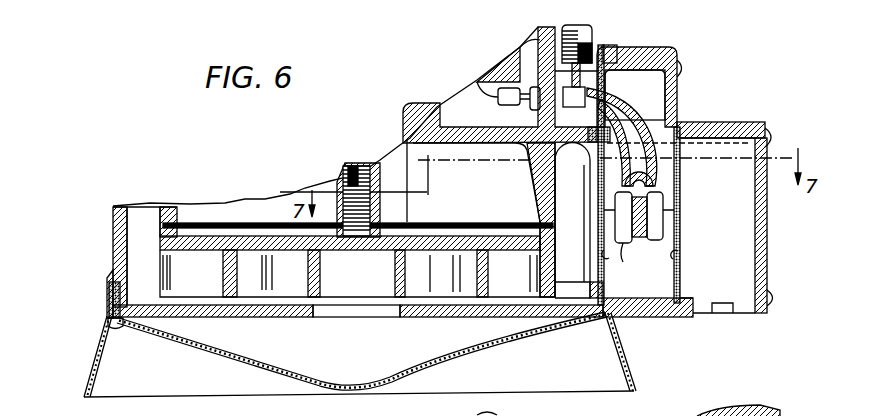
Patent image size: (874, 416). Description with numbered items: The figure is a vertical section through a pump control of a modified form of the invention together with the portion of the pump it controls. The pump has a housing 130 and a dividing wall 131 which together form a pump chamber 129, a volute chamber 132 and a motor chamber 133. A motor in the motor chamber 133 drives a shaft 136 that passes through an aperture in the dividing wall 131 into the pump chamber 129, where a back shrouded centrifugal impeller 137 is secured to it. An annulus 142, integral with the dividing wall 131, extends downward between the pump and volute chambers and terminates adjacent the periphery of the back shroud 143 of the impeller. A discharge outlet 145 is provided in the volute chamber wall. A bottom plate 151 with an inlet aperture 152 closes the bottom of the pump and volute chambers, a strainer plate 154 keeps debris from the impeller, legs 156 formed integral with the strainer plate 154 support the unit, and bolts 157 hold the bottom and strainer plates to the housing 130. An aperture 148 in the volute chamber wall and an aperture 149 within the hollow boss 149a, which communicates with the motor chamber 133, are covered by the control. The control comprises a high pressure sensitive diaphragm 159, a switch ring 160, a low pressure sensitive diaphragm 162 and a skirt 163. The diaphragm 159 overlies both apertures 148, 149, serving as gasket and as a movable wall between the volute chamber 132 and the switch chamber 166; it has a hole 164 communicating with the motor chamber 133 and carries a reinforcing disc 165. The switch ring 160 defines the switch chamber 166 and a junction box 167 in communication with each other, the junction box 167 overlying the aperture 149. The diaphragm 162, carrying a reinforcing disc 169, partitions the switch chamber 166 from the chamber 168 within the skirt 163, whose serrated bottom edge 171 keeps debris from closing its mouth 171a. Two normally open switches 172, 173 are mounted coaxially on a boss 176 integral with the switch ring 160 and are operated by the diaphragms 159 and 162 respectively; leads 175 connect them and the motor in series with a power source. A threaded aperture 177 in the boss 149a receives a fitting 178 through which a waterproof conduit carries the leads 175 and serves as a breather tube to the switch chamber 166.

The pump chamber 129 is at (260, 212).
The housing 130 is at (112, 219).
The dividing wall 131 is at (413, 131).
The volute chamber 132 is at (138, 212).
The motor chamber 133 is at (452, 107).
The shaft 136 is at (352, 175).
The back shrouded centrifugal impeller 137 is at (307, 280).
The annulus 142 is at (533, 173).
The back shroud 143 is at (398, 227).
The discharge outlet 145 is at (773, 405).
The aperture 148 is at (592, 198).
The aperture 149 is at (570, 117).
The hollow boss 149a is at (530, 40).
The bottom plate 151 is at (288, 320).
The inlet aperture 152 is at (353, 313).
The strainer plate 154 is at (213, 353).
The legs 156 is at (95, 348).
The bolts 157 is at (108, 328).
The high pressure sensitive diaphragm 159 is at (602, 227).
The switch ring 160 is at (662, 317).
The low pressure sensitive diaphragm 162 is at (677, 172).
The skirt 163 is at (765, 228).
The hole 164 is at (608, 92).
The reinforcing disc 165 is at (605, 255).
The switch chamber 166 is at (667, 290).
The junction box 167 is at (678, 87).
The chamber 168 is at (747, 256).
The reinforcing disc 169 is at (677, 255).
The serrated bottom edge 171 is at (740, 313).
The mouth 171a is at (720, 313).
The switch 172 is at (625, 243).
The switch 173 is at (658, 202).
The leads 175 is at (627, 117).
The boss 176 is at (637, 241).
The threaded aperture 177 is at (617, 53).
The fitting 178 is at (597, 37).